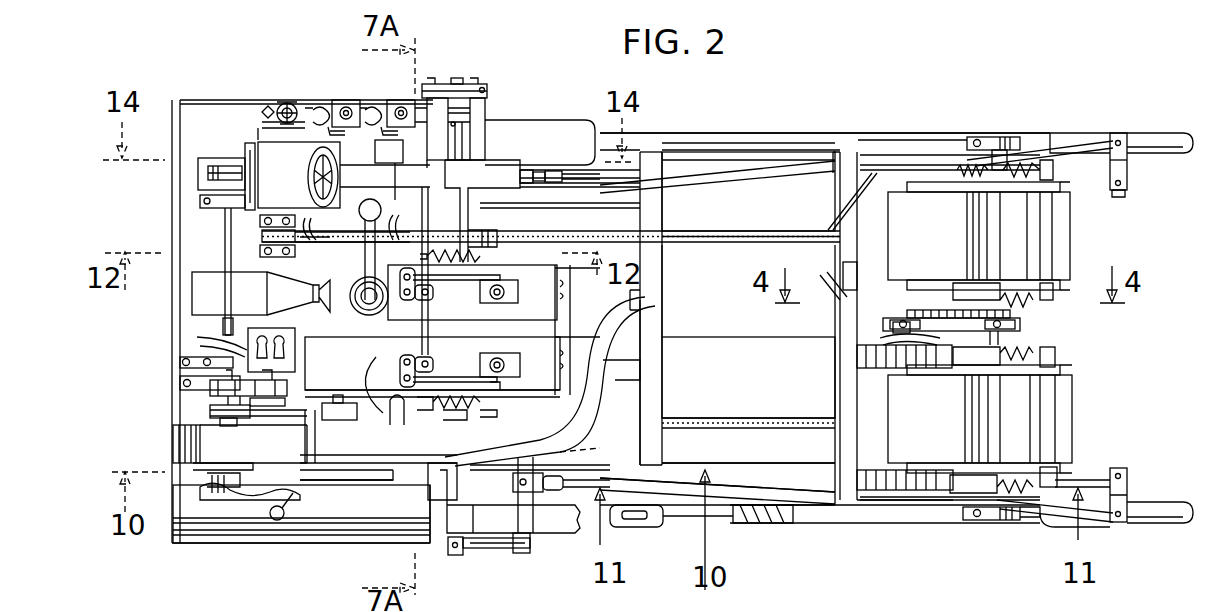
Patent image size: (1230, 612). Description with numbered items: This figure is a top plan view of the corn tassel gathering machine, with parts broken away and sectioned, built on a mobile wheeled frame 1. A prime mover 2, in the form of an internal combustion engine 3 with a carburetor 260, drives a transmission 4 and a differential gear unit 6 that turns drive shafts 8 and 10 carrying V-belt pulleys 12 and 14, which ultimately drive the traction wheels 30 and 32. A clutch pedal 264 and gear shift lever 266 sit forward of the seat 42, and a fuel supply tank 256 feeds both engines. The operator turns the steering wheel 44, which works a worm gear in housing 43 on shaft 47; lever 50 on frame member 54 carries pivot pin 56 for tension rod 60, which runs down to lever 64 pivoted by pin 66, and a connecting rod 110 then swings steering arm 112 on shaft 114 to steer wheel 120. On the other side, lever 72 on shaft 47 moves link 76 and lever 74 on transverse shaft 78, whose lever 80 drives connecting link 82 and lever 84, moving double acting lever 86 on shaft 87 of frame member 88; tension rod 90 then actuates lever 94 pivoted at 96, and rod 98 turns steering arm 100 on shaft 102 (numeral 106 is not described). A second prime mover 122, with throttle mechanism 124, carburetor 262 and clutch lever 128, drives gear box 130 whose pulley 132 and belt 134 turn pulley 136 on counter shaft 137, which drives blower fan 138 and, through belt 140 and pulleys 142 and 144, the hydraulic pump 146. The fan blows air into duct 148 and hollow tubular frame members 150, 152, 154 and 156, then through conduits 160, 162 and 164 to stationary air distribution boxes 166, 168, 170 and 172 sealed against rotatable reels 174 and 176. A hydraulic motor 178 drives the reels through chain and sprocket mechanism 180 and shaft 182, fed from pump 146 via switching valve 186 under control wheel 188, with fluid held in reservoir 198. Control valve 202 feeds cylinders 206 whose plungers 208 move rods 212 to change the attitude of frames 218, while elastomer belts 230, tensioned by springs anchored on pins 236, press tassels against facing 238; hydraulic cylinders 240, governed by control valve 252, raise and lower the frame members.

The mobile wheeled frame 1 is at (676, 130).
The prime mover 2 is at (656, 290).
The internal combustion engine 3 is at (553, 307).
The transmission 4 is at (345, 272).
The differential gear unit 6 is at (217, 273).
The drive shaft 8 is at (225, 236).
The drive shaft 10 is at (224, 326).
The V-belt pulley 12 is at (220, 166).
The V-belt pulley 14 is at (217, 500).
The traction wheel 30 is at (549, 121).
The traction wheel 32 is at (578, 530).
The seat 42 is at (268, 148).
The worm gear housing 43 is at (505, 163).
The steering wheel 44 is at (316, 152).
The shaft 47 is at (488, 113).
The lever 50 is at (530, 182).
The frame member 54 is at (681, 190).
The pivot pin 56 is at (548, 180).
The tension rod 60 is at (719, 165).
The lever 64 is at (1040, 140).
The pivot pin 66 is at (1030, 138).
The lever 72 is at (480, 98).
The lever 74 is at (438, 84).
The pitman or link 76 is at (427, 100).
The shaft 78 is at (460, 80).
The lever 80 is at (470, 550).
The connecting link 82 is at (492, 548).
The lever 84 is at (527, 548).
The double acting lever 86 is at (513, 483).
The shaft 87 is at (530, 463).
The frame member 88 is at (727, 466).
The tension rod 90 is at (768, 490).
The double acting lever 94 is at (1033, 517).
The pivot 96 is at (1023, 521).
The rod 98 is at (1090, 515).
The steering arm 100 is at (1127, 518).
The shaft 102 is at (1125, 489).
The handle 106 is at (1165, 522).
The connecting rod 110 is at (1088, 140).
The steering arm 112 is at (1118, 132).
The shaft 114 is at (1128, 171).
The wheel 120 is at (1165, 133).
The second prime mover unit 122 is at (533, 384).
The throttle mechanism 124 is at (405, 194).
The lever 128 is at (427, 413).
The gear box 130 is at (365, 385).
The transmission pulley 132 is at (334, 423).
The belt 134 is at (253, 414).
The pulley 136 is at (213, 414).
The counter shaft 137 is at (198, 342).
The blower fan 138 is at (185, 442).
The belt 140 is at (300, 383).
The pulley 142 is at (213, 390).
The pulley 144 is at (306, 373).
The hydraulic pump 146 is at (270, 333).
The duct 148 is at (630, 383).
The hollow tubular frame member 150 is at (670, 291).
The hollow tubular frame member 152 is at (779, 140).
The hollow tubular frame member 154 is at (701, 331).
The hollow tubular frame member 156 is at (817, 517).
The conduit 160 is at (850, 265).
The conduit 162 is at (858, 356).
The conduit 164 is at (893, 498).
The air distribution box 166 is at (1012, 195).
The air distribution box 168 is at (1020, 290).
The air distribution box 170 is at (1020, 367).
The air distribution box 172 is at (1018, 473).
The reel 174 is at (1085, 215).
The reel 176 is at (1085, 404).
The hydraulic motor 178 is at (893, 328).
The chain and sprocket mechanism 180 is at (1010, 314).
The shaft 182 is at (1020, 341).
The switching valve 186 is at (292, 103).
The control wheel 188 is at (278, 103).
The storage reservoir 198 is at (230, 530).
The lever operated control valve 202 is at (358, 100).
The cylinder 206 is at (308, 222).
The plunger 208 is at (440, 228).
The rod 212 is at (761, 236).
The frame 218 is at (1072, 282).
The flexible elastomer belt 230 is at (894, 220).
The pin 236 is at (1055, 294).
The facing 238 is at (1000, 233).
The hydraulic cylinder 240 is at (628, 526).
The control valve 252 is at (397, 100).
The fuel supply tank 256 is at (340, 538).
The carburetor 260 is at (512, 312).
The carburetor 262 is at (512, 366).
The clutch pedal 264 is at (375, 150).
The gear shift lever 266 is at (358, 204).